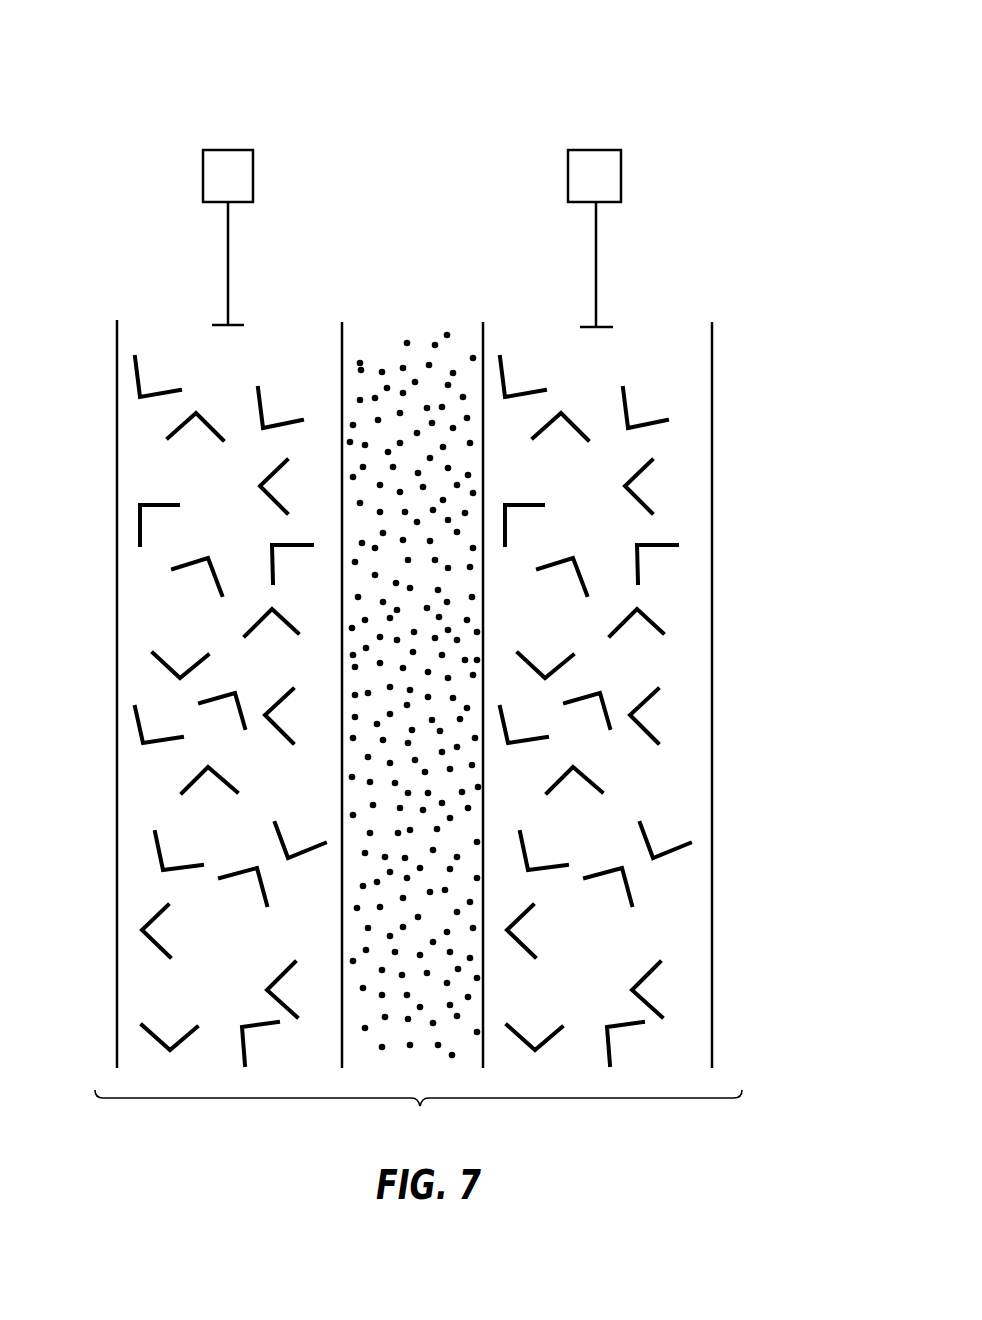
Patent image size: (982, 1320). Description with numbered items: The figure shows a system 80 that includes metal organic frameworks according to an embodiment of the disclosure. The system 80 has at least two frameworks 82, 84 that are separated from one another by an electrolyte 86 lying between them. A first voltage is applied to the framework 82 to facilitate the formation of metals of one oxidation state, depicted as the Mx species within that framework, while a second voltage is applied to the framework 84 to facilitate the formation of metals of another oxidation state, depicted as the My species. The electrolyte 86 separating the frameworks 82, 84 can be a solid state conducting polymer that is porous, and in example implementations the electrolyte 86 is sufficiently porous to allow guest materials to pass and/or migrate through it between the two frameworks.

The system 80 is at (760, 128).
The framework 82 is at (147, 607).
The framework 84 is at (680, 893).
The electrolyte 86 is at (428, 408).